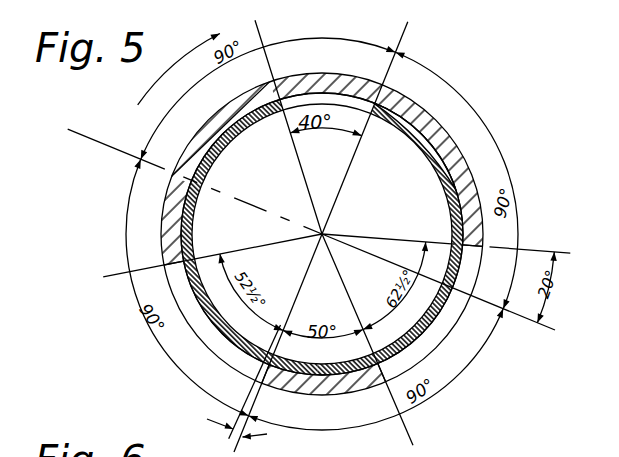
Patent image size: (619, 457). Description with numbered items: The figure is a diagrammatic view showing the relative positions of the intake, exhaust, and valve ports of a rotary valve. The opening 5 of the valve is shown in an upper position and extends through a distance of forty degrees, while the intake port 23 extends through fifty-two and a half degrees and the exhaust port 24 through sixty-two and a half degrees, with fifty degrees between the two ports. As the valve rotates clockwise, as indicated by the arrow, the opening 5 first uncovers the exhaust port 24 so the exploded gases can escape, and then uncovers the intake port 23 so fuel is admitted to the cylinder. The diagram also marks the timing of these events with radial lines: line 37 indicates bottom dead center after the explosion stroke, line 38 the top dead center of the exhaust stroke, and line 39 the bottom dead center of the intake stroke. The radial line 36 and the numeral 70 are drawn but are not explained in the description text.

In FIG. 5, the opening 5 is at (340, 97).
In FIG. 5, the intake port 23 is at (230, 359).
In FIG. 5, the exhaust port 24 is at (458, 312).
In FIG. 5, the reference line 36 is at (402, 38).
In FIG. 5, the line 37 is at (557, 330).
In FIG. 5, the line 38 is at (232, 449).
In FIG. 5, the line 39 is at (117, 152).
In FIG. 6, the component 70 is at (323, 449).